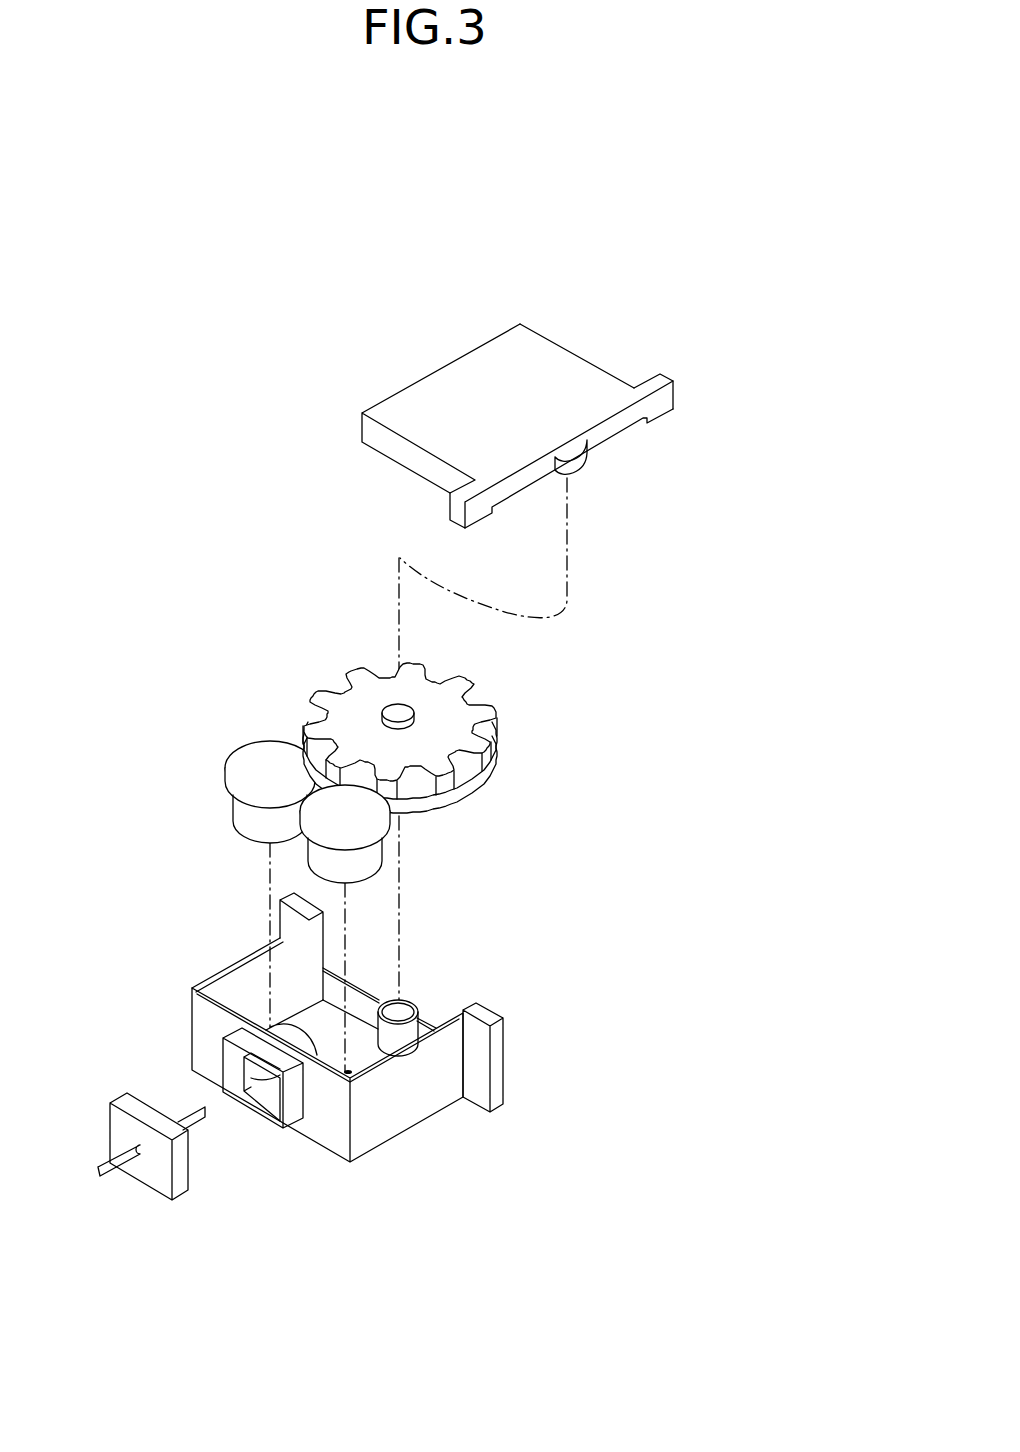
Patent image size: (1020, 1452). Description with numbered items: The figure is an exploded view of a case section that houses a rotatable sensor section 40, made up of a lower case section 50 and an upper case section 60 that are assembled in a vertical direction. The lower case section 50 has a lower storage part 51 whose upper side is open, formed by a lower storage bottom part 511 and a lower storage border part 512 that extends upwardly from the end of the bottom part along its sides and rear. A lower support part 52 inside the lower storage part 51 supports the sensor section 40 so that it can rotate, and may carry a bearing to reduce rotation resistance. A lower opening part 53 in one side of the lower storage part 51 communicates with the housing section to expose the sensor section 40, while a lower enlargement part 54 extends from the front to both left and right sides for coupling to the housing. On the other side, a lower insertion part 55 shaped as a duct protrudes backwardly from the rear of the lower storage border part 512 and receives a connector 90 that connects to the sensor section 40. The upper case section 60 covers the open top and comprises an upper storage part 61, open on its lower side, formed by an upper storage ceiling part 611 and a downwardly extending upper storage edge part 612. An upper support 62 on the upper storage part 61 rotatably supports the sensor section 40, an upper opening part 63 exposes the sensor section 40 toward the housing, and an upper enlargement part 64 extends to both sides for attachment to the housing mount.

The sensor section 40 is at (490, 712).
The lower case section 50 is at (318, 1302).
The lower storage part 51 is at (465, 1230).
The lower storage bottom part 511 is at (358, 1052).
The lower storage border part 512 is at (373, 1137).
The lower support part 52 is at (418, 1000).
The lower opening part 53 is at (363, 985).
The lower enlargement part 54 is at (495, 1098).
The lower insertion part 55 is at (295, 1115).
The upper case section 60 is at (502, 166).
The upper storage part 61 is at (562, 232).
The upper storage ceiling part 611 is at (532, 340).
The upper storage edge part 612 is at (452, 352).
The upper support 62 is at (573, 453).
The upper opening part 63 is at (632, 417).
The upper enlargement part 64 is at (653, 382).
The connector 90 is at (190, 1178).